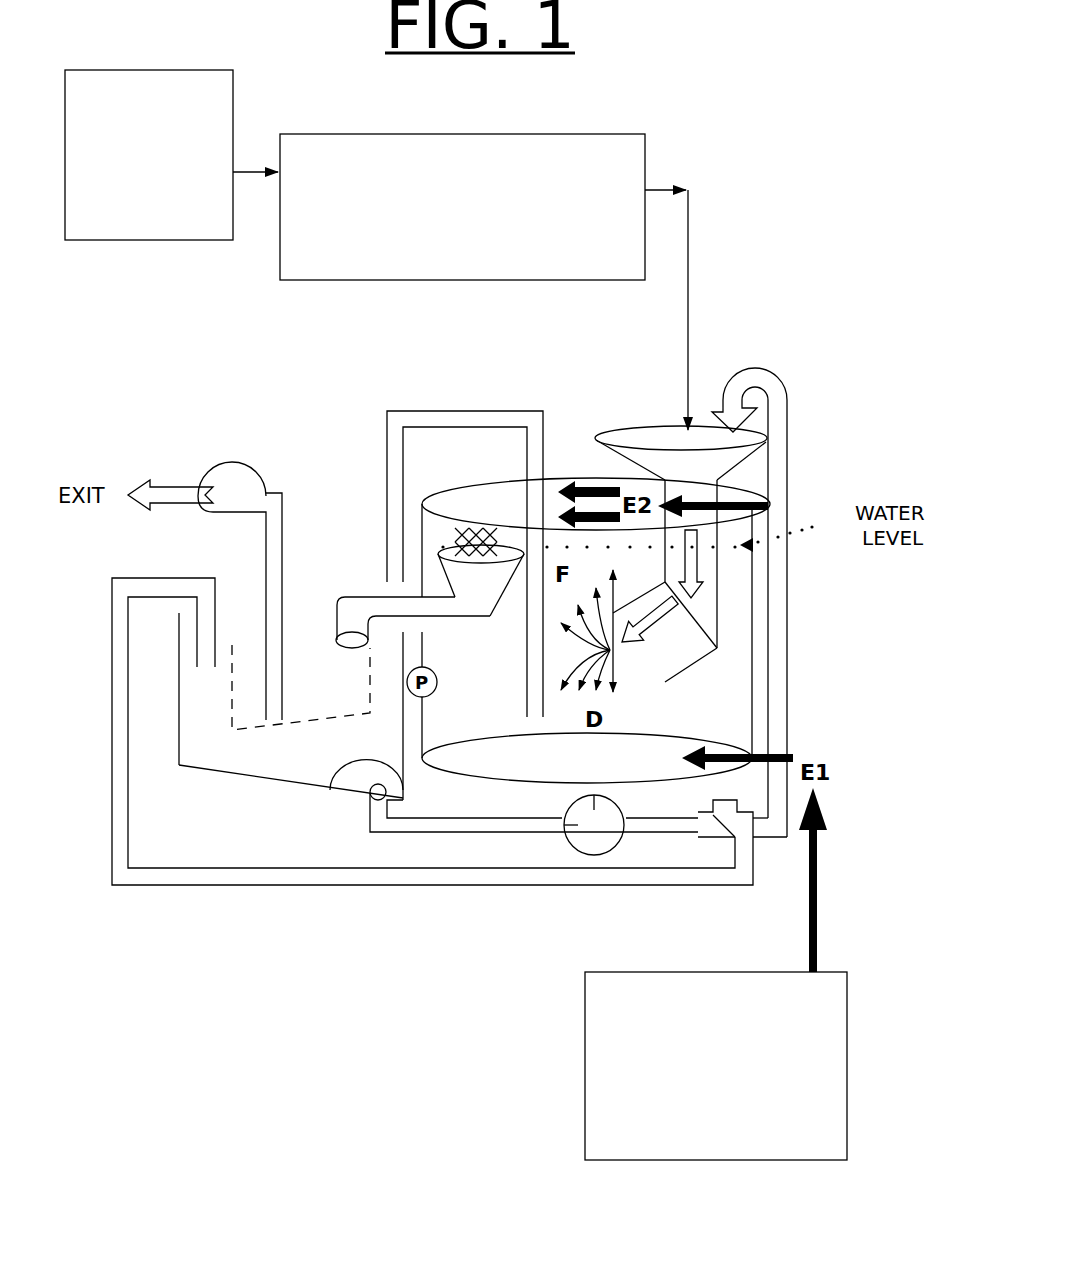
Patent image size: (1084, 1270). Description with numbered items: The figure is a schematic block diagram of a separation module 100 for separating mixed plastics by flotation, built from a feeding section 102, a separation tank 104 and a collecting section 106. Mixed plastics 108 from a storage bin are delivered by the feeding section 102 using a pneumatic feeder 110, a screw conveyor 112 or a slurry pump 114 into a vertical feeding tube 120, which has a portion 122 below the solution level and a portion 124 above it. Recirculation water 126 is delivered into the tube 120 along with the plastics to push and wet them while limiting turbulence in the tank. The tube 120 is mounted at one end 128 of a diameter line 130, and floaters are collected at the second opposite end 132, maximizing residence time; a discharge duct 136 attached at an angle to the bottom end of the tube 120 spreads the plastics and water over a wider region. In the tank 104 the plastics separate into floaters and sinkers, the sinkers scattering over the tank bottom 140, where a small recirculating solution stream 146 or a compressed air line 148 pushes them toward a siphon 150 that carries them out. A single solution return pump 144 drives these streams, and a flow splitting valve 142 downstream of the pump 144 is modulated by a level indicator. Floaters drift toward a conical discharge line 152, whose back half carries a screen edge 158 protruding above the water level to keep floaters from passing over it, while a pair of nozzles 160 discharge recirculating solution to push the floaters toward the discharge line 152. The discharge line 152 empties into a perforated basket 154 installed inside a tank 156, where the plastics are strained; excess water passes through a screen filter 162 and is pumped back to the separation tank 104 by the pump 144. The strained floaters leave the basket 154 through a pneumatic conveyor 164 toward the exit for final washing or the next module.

The separation module 100 is at (698, 103).
The feeding section 102 is at (462, 207).
The separation tank 104 is at (597, 512).
The collecting section 106 is at (369, 568).
The mixed plastics 108 is at (171, 155).
The pneumatic feeder 110 is at (461, 191).
The screw conveyor 112 is at (462, 222).
The slurry pump 114 is at (462, 253).
The vertical feeding tube 120 is at (650, 424).
The portion below solution level 122 is at (722, 573).
The portion above solution level 124 is at (766, 458).
The recirculation water 126 is at (735, 395).
The end of diameter line 128 is at (770, 480).
The diameter line 130 is at (723, 605).
The second opposite end 132 is at (717, 648).
The discharge duct 136 is at (692, 667).
The tank bottom 140 is at (607, 775).
The flow splitting valve 142 is at (698, 837).
The pump 144 is at (534, 825).
The recirculating solution stream 146 is at (716, 1066).
The compressed air line 148 is at (716, 1114).
The siphon 150 is at (385, 432).
The conical discharge line 152 is at (500, 590).
The perforated basket 154 is at (283, 733).
The tank 156 is at (251, 779).
The screen edge 158 is at (461, 530).
The nozzles 160 is at (600, 472).
The screen filter 162 is at (347, 768).
The pneumatic conveyor 164 is at (268, 490).